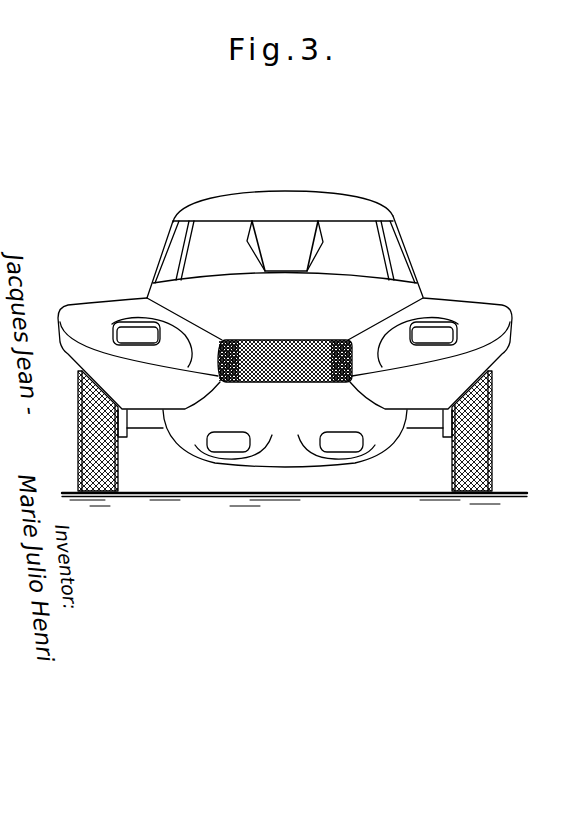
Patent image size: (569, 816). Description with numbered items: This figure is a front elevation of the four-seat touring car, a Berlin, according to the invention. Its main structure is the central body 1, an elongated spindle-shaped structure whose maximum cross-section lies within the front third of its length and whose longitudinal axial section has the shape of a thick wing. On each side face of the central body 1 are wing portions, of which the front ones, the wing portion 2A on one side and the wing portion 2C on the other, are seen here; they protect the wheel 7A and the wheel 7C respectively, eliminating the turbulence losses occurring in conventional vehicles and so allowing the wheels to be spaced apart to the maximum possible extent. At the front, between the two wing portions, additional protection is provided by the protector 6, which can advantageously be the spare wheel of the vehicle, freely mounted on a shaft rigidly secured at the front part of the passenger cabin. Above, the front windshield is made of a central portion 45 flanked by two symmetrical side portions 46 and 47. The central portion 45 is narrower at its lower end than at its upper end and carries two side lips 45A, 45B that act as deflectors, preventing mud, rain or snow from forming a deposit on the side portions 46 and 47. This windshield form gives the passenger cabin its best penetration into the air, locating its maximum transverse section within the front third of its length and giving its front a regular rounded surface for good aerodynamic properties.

The central body 1 is at (378, 213).
The wing portion 2A is at (483, 322).
The wing portion 2C is at (98, 318).
The protector 6 is at (307, 343).
The wheel 7A is at (493, 453).
The wheel 7C is at (80, 440).
The central portion of the front windshield 45 is at (288, 228).
The side lip 45A is at (323, 240).
The side lip 45B is at (248, 228).
The side portion of the front windshield 46 is at (368, 252).
The side portion of the front windshield 47 is at (202, 262).